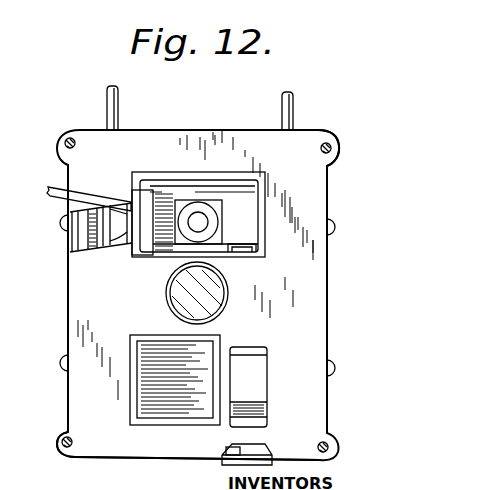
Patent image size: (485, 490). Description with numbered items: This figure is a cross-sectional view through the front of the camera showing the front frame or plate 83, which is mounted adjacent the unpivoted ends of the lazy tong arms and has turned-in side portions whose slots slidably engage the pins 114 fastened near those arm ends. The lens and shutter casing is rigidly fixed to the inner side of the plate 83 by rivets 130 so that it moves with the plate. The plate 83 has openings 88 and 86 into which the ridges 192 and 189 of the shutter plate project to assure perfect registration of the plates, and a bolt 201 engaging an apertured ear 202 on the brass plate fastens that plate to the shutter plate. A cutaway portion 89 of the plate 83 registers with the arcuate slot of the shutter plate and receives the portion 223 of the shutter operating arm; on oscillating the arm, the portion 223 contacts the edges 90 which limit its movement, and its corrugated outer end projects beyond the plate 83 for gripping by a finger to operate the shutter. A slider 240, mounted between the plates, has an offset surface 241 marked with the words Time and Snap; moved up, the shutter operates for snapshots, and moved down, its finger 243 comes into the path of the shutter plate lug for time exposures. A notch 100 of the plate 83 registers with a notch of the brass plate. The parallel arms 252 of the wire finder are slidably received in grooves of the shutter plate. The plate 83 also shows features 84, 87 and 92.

The front frame or plate 83 is at (310, 296).
The viewing window 84 is at (228, 293).
The opening of plate 83 86 is at (152, 423).
The plate bottom edge 87 is at (280, 419).
The opening of plate 83 88 is at (228, 178).
The cutaway portion 89 is at (121, 253).
The edges 90 is at (113, 197).
The screws 92 is at (62, 138).
The notch of plate 83 100 is at (230, 447).
The pins 114 is at (334, 228).
The rivets 130 is at (335, 157).
The ridge 189 is at (177, 422).
The ridge 192 is at (165, 178).
The bolt 201 is at (200, 222).
The apertured ear 202 is at (173, 222).
The portion of arm 222 223 is at (56, 194).
The slider 240 is at (247, 420).
The offset surface 241 is at (263, 372).
The finger 243 is at (230, 463).
The parallel arms 252 is at (107, 97).